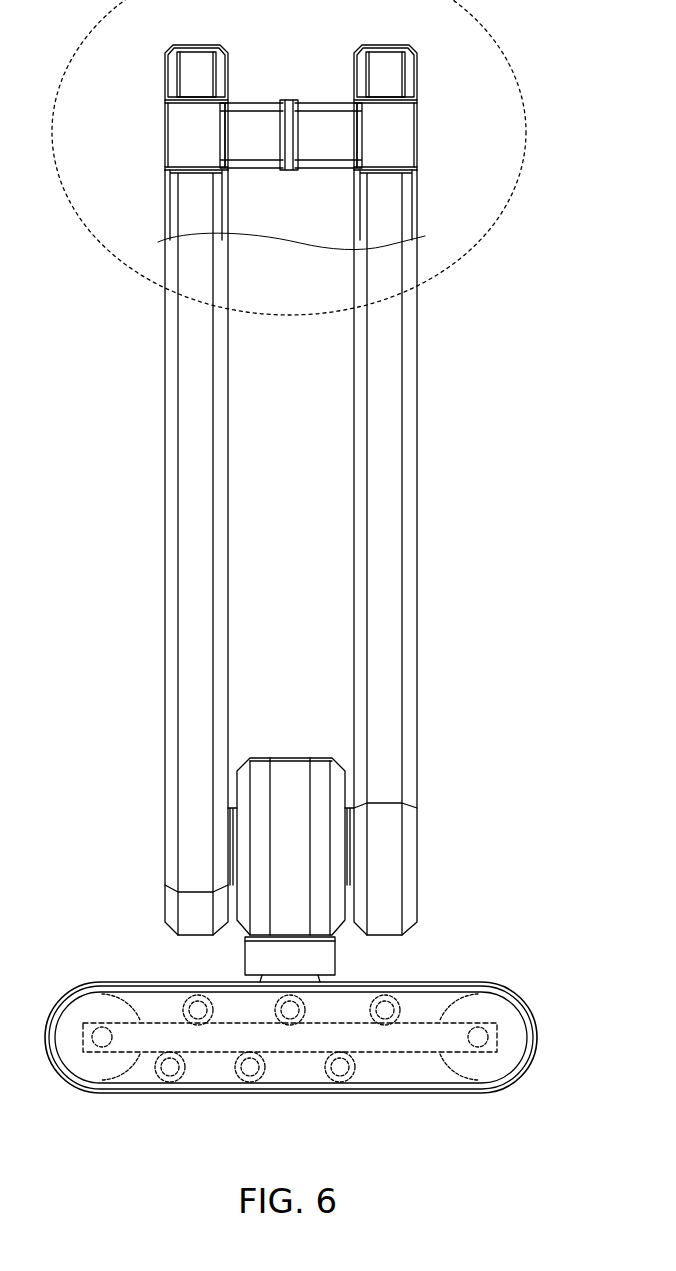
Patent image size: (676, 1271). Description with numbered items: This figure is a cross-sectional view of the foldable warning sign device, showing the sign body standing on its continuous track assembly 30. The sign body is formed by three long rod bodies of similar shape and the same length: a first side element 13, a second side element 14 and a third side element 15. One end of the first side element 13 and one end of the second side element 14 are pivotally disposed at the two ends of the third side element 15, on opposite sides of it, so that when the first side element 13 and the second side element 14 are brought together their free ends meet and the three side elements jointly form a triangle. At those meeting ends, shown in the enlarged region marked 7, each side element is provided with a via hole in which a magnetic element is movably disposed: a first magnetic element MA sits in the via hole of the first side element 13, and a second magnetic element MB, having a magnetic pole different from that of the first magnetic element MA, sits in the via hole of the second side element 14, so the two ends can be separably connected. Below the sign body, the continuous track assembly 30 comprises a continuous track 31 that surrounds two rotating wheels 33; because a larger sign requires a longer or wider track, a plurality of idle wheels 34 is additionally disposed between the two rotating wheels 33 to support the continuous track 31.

The enlarged detail region 7 is at (105, 248).
The first side element 13 is at (409, 53).
The second side element 14 is at (173, 52).
The third side element 15 is at (284, 770).
The continuous track assembly 30 is at (518, 986).
The continuous track 31 is at (190, 1092).
The rotating wheels 33 is at (103, 1074).
The idle wheels 34 is at (341, 1084).
The first magnetic element MA is at (328, 103).
The second magnetic element MB is at (244, 107).